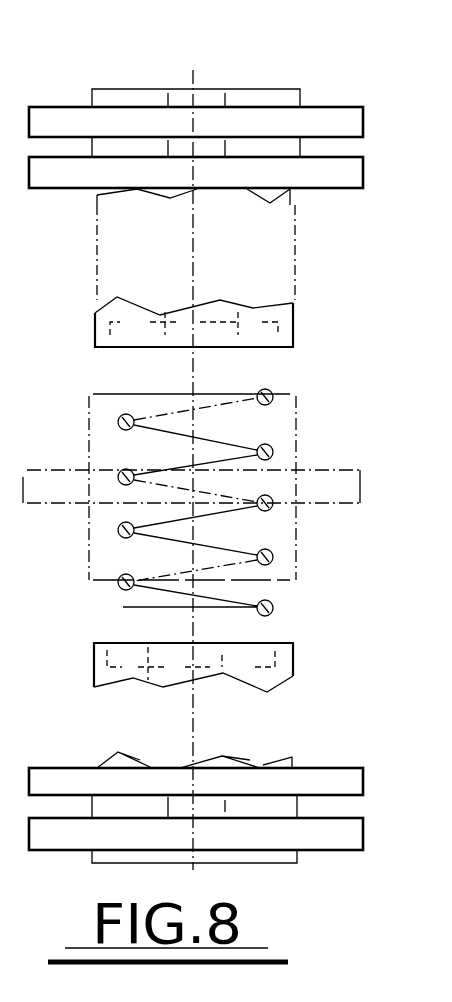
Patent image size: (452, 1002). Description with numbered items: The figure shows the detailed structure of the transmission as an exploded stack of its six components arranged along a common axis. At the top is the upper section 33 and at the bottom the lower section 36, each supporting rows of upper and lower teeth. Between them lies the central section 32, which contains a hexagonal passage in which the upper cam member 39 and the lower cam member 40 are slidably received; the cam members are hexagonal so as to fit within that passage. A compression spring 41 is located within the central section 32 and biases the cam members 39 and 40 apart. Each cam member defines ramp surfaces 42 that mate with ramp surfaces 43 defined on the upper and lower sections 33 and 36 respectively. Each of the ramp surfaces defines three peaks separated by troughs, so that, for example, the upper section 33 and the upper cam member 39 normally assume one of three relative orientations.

The central section 32 is at (90, 420).
The upper section 33 is at (183, 106).
The lower section 36 is at (238, 840).
The upper cam member 39 is at (287, 327).
The lower cam member 40 is at (293, 658).
The compression spring 41 is at (270, 450).
The ramp surfaces 42 is at (160, 315).
The ramp surfaces 43 is at (247, 189).